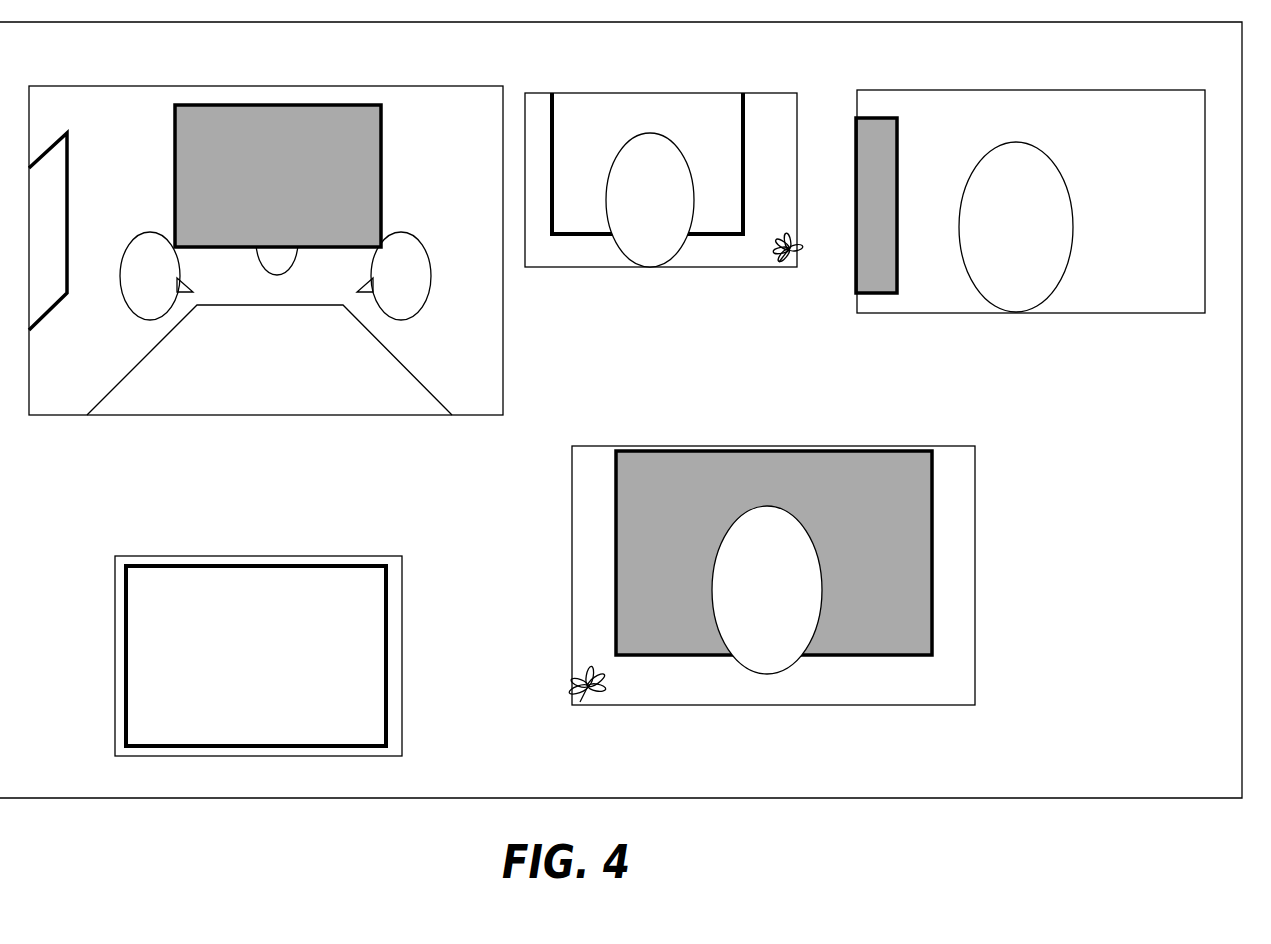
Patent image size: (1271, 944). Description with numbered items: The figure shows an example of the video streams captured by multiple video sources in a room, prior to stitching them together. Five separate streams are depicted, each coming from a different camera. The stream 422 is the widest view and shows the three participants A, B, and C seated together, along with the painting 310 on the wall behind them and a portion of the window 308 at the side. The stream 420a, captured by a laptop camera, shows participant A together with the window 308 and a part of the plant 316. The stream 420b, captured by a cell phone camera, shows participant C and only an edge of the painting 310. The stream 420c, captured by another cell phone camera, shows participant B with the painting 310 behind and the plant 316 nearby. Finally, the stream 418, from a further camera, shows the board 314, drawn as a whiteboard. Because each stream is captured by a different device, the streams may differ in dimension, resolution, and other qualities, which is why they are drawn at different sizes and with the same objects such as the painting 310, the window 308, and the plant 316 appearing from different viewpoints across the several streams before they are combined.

The window 308 is at (55, 188).
The painting 310 is at (353, 163).
The board 314 is at (358, 668).
The plant 316 is at (785, 255).
The stream 418 is at (253, 553).
The stream 420a is at (658, 98).
The stream 420b is at (1030, 93).
The stream 420c is at (775, 448).
The stream 422 is at (265, 87).